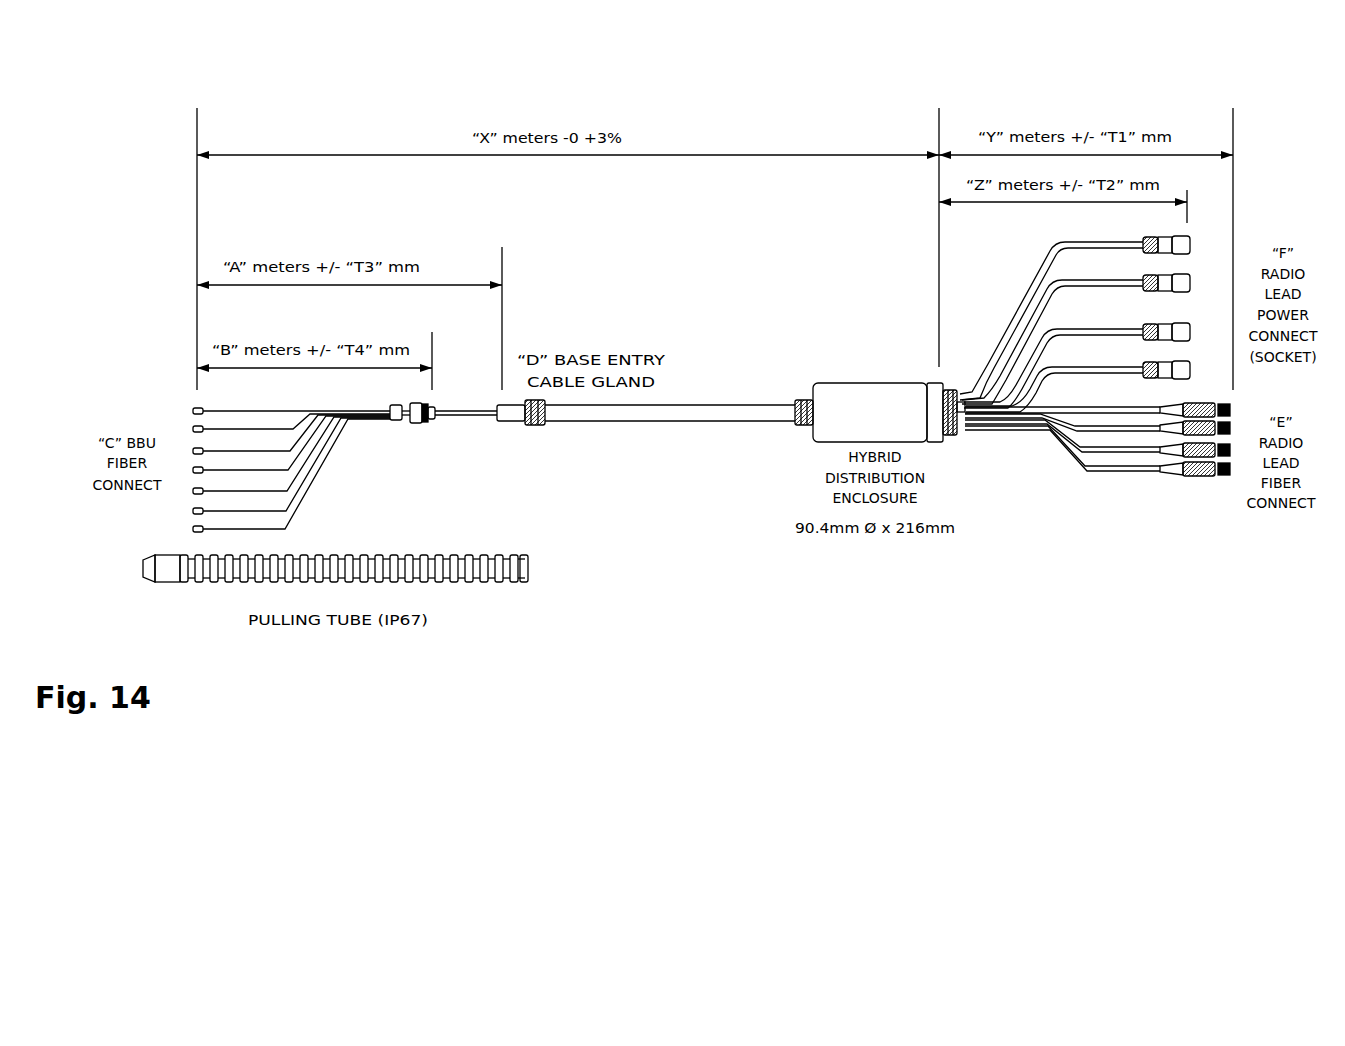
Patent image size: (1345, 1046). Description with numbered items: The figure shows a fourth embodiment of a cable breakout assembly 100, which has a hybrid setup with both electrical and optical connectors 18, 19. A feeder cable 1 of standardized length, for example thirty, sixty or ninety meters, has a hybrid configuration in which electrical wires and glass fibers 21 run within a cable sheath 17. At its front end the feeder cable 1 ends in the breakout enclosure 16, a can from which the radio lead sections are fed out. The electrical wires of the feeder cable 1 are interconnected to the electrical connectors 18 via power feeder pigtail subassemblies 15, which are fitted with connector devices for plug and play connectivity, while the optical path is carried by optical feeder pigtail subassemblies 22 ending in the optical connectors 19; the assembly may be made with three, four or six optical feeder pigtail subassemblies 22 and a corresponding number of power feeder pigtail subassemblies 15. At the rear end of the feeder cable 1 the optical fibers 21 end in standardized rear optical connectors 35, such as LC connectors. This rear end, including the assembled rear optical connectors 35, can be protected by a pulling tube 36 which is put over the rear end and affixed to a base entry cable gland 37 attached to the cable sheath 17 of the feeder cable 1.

The feeder cable 1 is at (820, 518).
The cable breakout assembly 100 is at (891, 519).
The power feeder pigtail subassembly 15 is at (990, 338).
The breakout enclosure 16 is at (1020, 521).
The cable sheath 17 is at (670, 529).
The electrical connector 18 is at (1200, 230).
The optical connector 19 is at (1252, 528).
The glass fibers 21 is at (288, 414).
The optical feeder pigtail subassembly 22 is at (1099, 530).
The rear optical connector 35 is at (141, 443).
The pulling tube 36 is at (335, 604).
The base entry cable gland 37 is at (577, 526).